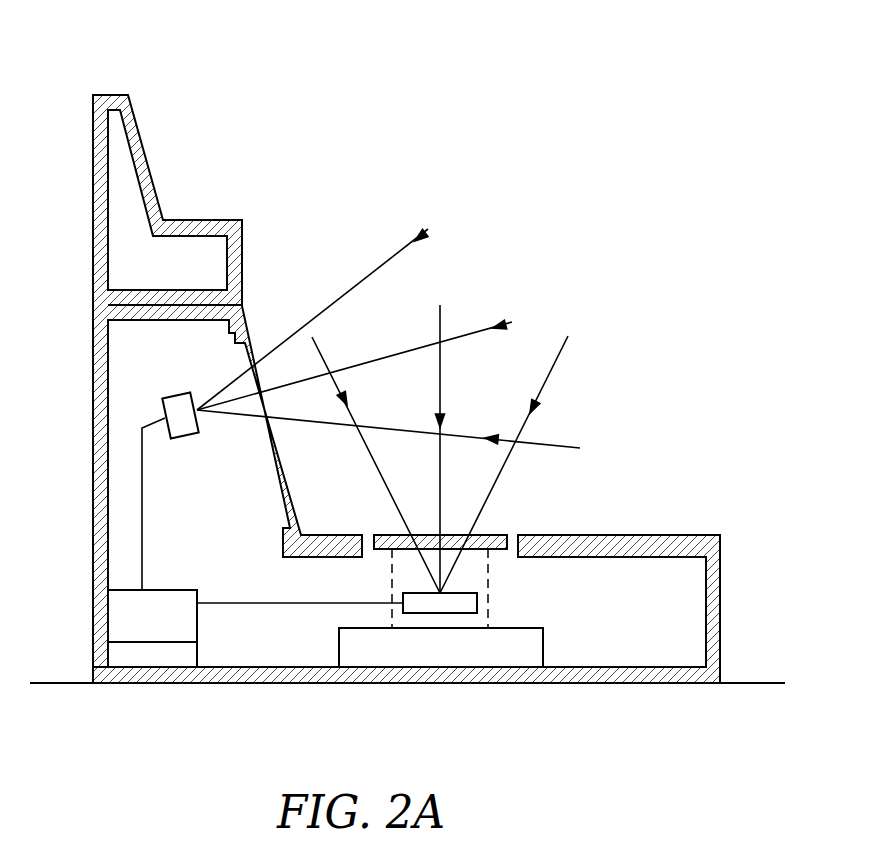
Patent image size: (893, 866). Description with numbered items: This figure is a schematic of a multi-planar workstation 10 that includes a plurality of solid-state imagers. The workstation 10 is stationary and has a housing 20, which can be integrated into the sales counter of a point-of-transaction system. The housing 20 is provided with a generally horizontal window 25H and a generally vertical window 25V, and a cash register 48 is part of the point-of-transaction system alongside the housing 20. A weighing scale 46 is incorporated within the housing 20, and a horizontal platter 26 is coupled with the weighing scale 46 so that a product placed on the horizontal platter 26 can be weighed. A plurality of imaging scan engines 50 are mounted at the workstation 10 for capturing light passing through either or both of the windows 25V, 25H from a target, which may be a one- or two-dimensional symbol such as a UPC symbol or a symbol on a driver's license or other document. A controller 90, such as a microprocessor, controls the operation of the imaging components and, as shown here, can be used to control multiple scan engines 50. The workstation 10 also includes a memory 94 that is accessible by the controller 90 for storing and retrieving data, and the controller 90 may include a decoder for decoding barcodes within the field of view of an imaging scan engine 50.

The workstation 10 is at (68, 50).
The housing 20 is at (693, 535).
The vertical window 25V is at (253, 343).
The horizontal window 25H is at (440, 466).
The horizontal platter 26 is at (396, 533).
The weighing scale 46 is at (348, 643).
The cash register 48 is at (93, 172).
The imaging scan engine 50 is at (163, 407).
The controller 90 is at (120, 613).
The memory 94 is at (120, 658).